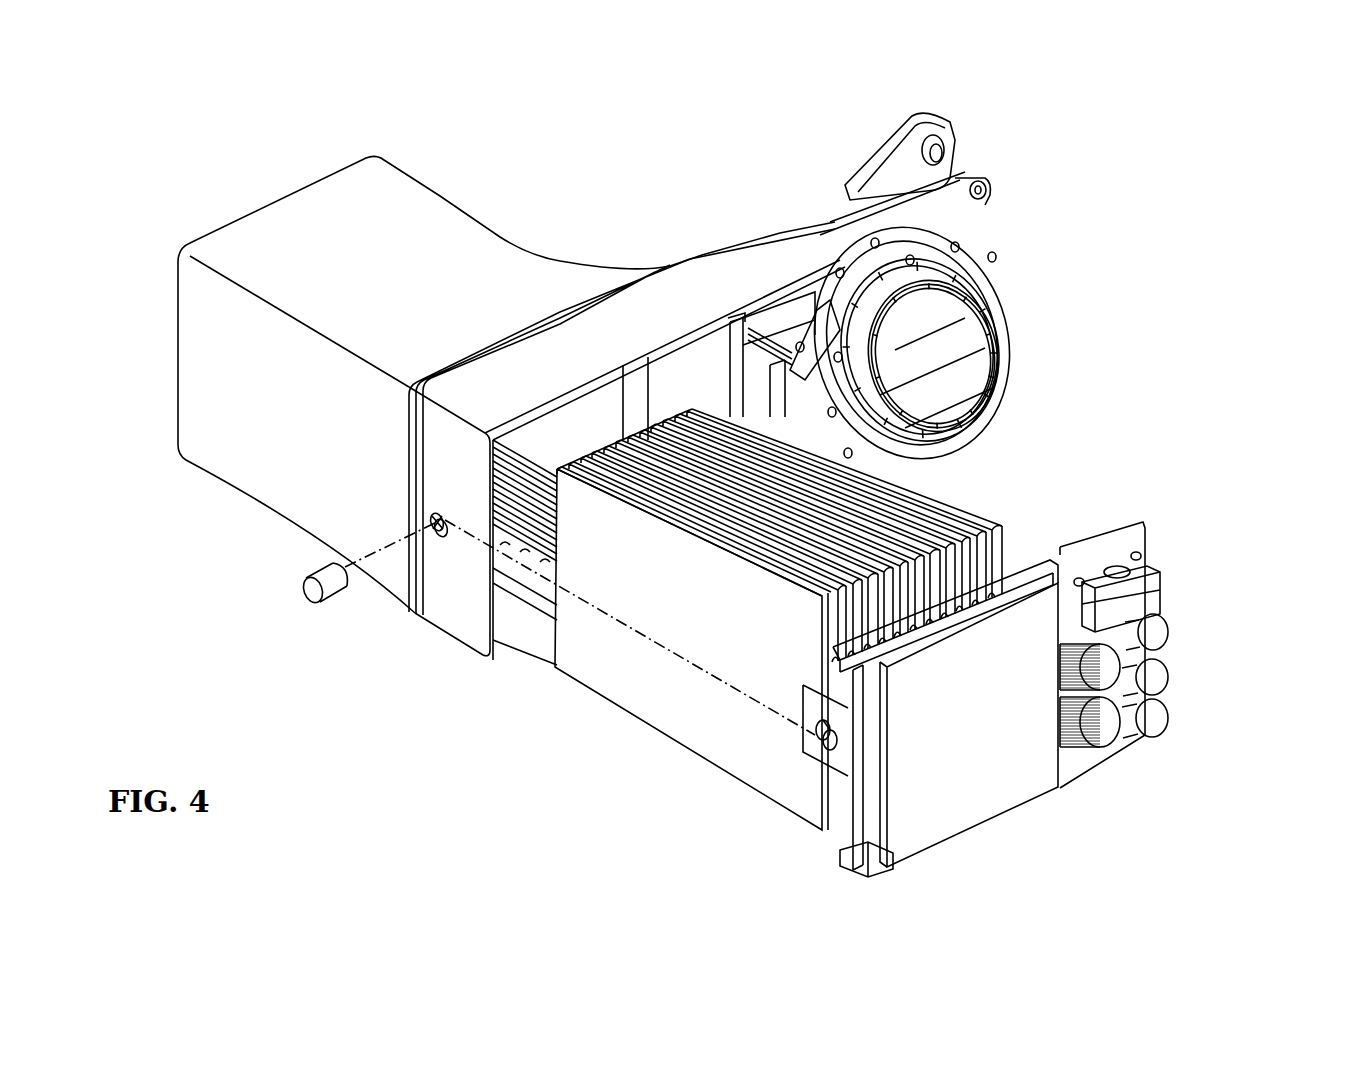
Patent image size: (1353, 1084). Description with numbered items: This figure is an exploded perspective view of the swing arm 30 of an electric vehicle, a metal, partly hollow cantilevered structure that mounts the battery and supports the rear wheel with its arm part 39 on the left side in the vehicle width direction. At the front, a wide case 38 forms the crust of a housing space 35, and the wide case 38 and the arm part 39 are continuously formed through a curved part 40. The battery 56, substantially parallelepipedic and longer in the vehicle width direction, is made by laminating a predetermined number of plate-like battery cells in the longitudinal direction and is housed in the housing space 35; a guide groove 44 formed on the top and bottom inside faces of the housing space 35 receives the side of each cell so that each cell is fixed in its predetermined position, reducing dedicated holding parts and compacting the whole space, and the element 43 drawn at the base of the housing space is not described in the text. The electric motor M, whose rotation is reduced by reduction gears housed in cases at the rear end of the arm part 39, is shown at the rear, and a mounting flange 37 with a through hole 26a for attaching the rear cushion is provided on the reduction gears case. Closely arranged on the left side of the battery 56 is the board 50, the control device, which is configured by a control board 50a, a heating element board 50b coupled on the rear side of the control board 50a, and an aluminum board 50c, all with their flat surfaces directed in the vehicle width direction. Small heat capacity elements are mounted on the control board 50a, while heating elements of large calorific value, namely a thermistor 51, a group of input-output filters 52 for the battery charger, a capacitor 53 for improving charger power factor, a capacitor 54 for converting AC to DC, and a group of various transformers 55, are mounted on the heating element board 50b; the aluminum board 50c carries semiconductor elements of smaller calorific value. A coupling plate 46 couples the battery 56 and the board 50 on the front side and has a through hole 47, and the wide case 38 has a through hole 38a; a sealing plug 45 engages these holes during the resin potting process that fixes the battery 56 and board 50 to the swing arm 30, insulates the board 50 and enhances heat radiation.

The housing space 35 is at (417, 203).
The curved part 40 is at (640, 270).
The arm part 39 is at (787, 243).
The swing arm 30 is at (730, 170).
The wide case 38 is at (434, 632).
The through hole 38a is at (437, 533).
The sealing plug 45 is at (312, 590).
The guide groove 44 is at (505, 553).
The heat sink 43 is at (515, 633).
The battery 56 is at (1002, 530).
The aluminum board 50c is at (990, 557).
The control board 50a is at (937, 823).
The board 50 is at (1051, 793).
The heating element board 50b is at (1120, 733).
The coupling plate 46 is at (810, 748).
The through hole 47 is at (827, 752).
The thermistor 51 is at (1118, 567).
The group of input-output filters 52 is at (1176, 622).
The capacitor 53 is at (1103, 665).
The group of various transformers 55 is at (1171, 682).
The capacitor 54 is at (1095, 740).
The electric motor M is at (963, 352).
The mounting flange 37 is at (917, 157).
The through hole 26a is at (937, 148).